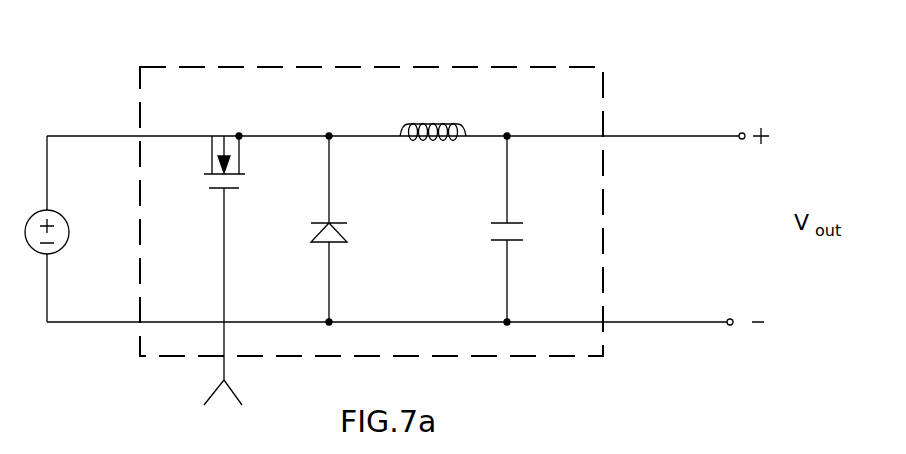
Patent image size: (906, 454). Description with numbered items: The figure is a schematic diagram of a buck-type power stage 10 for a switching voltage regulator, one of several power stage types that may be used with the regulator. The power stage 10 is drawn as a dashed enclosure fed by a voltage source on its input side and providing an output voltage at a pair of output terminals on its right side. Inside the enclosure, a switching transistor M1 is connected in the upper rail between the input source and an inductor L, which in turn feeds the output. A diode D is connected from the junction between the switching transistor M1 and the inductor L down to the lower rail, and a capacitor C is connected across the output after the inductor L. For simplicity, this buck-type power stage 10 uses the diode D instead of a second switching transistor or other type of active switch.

The power stage 10 is at (205, 66).
The switching transistor M1 is at (224, 258).
The inductor L is at (433, 119).
The diode D is at (343, 229).
The output capacitor C is at (519, 229).